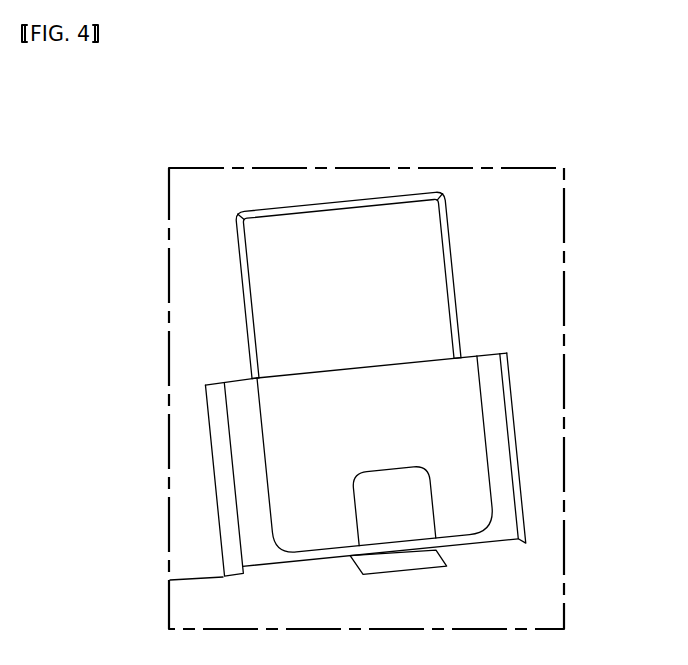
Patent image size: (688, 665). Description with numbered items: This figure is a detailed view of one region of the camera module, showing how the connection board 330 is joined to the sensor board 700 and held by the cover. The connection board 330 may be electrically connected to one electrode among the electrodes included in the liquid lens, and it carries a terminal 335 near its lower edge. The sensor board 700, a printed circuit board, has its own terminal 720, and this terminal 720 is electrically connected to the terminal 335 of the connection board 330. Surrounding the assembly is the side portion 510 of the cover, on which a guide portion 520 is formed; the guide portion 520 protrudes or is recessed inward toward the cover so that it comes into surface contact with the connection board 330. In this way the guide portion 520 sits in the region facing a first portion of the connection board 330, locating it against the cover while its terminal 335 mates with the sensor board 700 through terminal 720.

The side portion of the cover 510 is at (200, 272).
The guide portion 520 is at (292, 225).
The connection board 330 is at (473, 422).
The terminal of the connection board 335 is at (413, 484).
The terminal of the sensor board 720 is at (430, 561).
The sensor board 700 is at (490, 598).